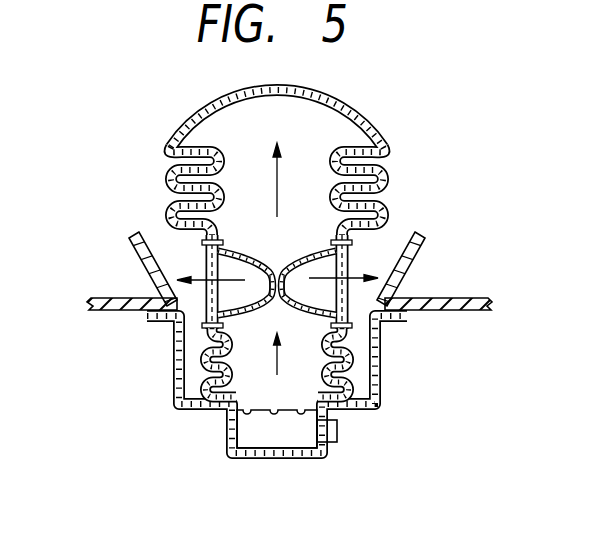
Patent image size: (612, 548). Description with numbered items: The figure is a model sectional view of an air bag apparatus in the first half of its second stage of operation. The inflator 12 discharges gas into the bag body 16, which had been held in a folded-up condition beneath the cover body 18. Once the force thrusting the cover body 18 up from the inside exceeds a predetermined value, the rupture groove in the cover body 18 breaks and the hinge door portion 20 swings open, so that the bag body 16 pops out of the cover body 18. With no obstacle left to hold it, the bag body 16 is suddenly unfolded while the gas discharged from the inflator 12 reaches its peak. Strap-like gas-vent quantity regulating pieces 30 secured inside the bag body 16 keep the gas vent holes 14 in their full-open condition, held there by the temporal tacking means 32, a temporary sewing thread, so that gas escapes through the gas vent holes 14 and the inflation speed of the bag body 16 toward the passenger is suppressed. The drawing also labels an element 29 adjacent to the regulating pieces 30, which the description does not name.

The inflator 12 is at (278, 438).
The gas vent holes 14 is at (207, 290).
The bag body 16 is at (338, 101).
The cover body 18 is at (108, 303).
The hinge door portion 20 is at (155, 246).
The housing 29 is at (356, 332).
The gas-vent quantity regulating pieces 30 is at (298, 251).
The temporal tacking means 32 is at (273, 300).